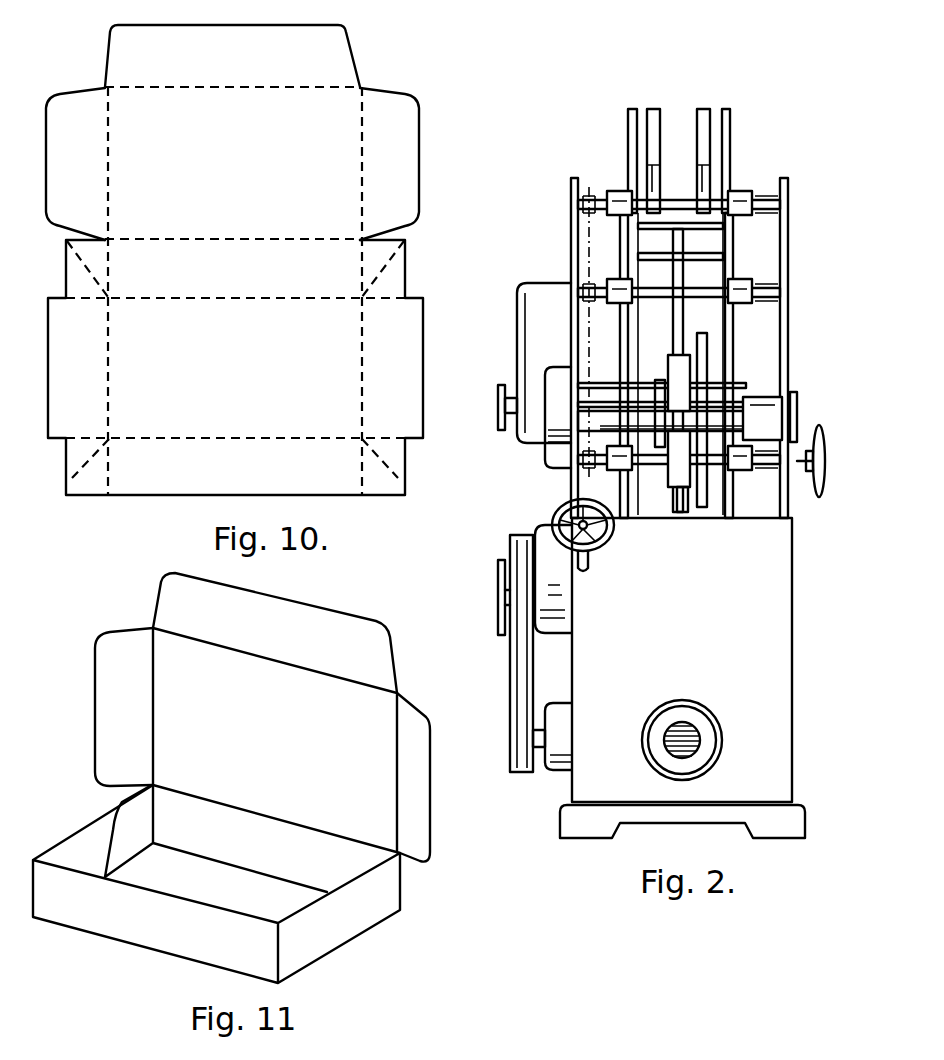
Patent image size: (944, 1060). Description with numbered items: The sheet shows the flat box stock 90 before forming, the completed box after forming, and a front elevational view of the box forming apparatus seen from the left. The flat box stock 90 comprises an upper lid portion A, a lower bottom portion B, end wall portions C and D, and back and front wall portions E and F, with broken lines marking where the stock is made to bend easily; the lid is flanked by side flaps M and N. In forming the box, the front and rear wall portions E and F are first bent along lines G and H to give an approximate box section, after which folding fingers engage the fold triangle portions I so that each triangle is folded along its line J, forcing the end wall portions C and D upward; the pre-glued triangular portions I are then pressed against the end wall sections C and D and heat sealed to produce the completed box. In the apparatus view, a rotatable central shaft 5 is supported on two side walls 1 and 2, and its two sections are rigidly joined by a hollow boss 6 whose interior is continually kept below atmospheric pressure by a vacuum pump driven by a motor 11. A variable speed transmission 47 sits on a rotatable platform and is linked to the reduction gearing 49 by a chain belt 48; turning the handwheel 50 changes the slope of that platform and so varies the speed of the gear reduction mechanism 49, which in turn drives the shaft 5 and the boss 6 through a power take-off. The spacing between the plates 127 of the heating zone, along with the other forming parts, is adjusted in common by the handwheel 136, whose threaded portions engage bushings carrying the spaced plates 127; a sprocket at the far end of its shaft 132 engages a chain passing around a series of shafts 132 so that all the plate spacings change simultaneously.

In FIG. 2, the side wall 1 is at (788, 243).
In FIG. 2, the side wall 2 is at (571, 242).
In FIG. 2, the rotatable central shaft 5 is at (768, 392).
In FIG. 2, the hollow boss 6 is at (672, 363).
In FIG. 2, the motor 11 is at (720, 758).
In FIG. 2, the variable speed transmission 47 is at (562, 773).
In FIG. 2, the chain belt 48 is at (518, 668).
In FIG. 2, the reduction gearing 49 is at (547, 530).
In FIG. 2, the handwheel 50 is at (613, 530).
In FIG. 2, the plates of the heating zone 127 is at (633, 327).
In FIG. 2, the shaft 132 is at (758, 199).
In FIG. 2, the handwheel 136 is at (817, 496).
In FIG. 10, the flat box stock 90 is at (262, 381).
In FIG. 11, the flat box stock 90 is at (368, 926).
In FIG. 10, the upper lid portion A is at (258, 165).
In FIG. 11, the upper lid portion A is at (270, 760).
In FIG. 10, the lower bottom portion B is at (190, 405).
In FIG. 11, the lower bottom portion B is at (262, 908).
In FIG. 10, the end wall portion C is at (64, 365).
In FIG. 11, the end wall portion C is at (62, 880).
In FIG. 10, the end wall portion D is at (402, 354).
In FIG. 11, the end wall portion D is at (326, 946).
In FIG. 10, the back wall portion E is at (213, 250).
In FIG. 11, the back wall portion E is at (228, 842).
In FIG. 10, the front wall portion F is at (208, 484).
In FIG. 11, the front wall portion F is at (146, 932).
In FIG. 10, the fold line G is at (213, 300).
In FIG. 11, the fold line G is at (278, 878).
In FIG. 10, the fold line H is at (270, 438).
In FIG. 11, the fold line H is at (200, 956).
In FIG. 10, the fold triangle portion I is at (72, 286).
In FIG. 11, the fold triangle portion I is at (120, 804).
In FIG. 10, the fold line J is at (85, 272).
In FIG. 10, the right lid flap M is at (419, 150).
In FIG. 11, the right lid flap M is at (405, 797).
In FIG. 10, the left lid flap N is at (70, 108).
In FIG. 11, the left lid flap N is at (110, 715).